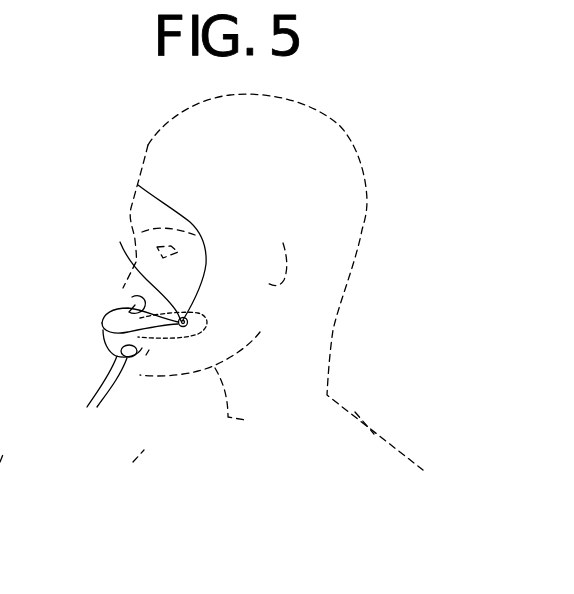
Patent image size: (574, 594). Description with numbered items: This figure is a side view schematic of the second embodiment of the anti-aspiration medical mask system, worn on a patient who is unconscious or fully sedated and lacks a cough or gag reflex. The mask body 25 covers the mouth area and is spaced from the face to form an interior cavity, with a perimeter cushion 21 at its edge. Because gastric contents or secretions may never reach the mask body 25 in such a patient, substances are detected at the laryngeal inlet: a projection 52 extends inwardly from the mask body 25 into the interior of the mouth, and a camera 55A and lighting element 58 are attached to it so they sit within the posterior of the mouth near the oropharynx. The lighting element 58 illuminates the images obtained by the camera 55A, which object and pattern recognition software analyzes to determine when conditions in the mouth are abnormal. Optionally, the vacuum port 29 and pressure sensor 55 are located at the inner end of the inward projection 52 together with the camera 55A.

The lighting element 58 is at (138, 185).
The camera 55A is at (120, 242).
The projection 52 is at (132, 297).
The mask body 25 is at (108, 311).
The aspiration-detecting sensor 55 is at (108, 339).
The vacuum port 29 is at (108, 368).
The perimeter cushion 21 is at (146, 355).